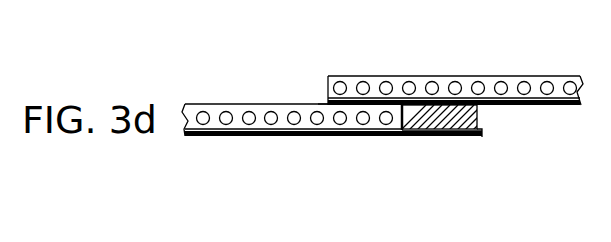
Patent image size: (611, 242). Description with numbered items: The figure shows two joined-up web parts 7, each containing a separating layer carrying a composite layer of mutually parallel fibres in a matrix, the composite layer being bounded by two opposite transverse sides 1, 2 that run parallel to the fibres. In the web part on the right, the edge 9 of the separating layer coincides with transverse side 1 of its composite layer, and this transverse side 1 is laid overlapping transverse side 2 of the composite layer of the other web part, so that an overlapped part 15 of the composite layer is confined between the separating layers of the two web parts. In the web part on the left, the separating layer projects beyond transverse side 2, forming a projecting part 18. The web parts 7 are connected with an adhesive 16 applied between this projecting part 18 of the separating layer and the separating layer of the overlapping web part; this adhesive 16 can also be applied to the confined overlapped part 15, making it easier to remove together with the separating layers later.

The web part 7 is at (203, 103).
The transverse side 1 is at (327, 99).
The edge of the separating layer 9 is at (325, 103).
The overlapped part 15 is at (375, 113).
The transverse side 2 is at (405, 133).
The projecting part of the separating layer 18 is at (430, 133).
The adhesive 16 is at (482, 137).